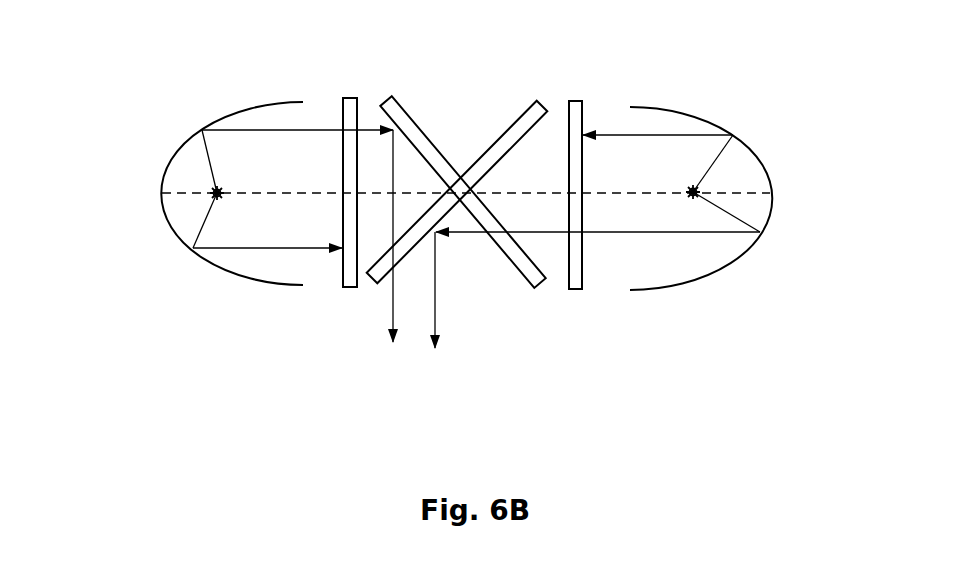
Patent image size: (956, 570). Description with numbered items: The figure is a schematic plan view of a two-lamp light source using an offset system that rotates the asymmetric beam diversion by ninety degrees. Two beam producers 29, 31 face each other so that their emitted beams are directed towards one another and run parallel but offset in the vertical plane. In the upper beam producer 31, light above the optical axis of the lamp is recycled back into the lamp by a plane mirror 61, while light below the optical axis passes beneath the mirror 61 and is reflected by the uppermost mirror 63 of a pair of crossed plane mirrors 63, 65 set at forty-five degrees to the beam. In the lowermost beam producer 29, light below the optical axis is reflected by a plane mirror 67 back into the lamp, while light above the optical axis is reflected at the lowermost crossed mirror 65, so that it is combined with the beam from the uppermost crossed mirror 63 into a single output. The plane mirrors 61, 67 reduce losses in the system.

The lowermost beam producer 29 is at (156, 208).
The upper beam producer 31 is at (773, 178).
The plane mirror 61 is at (585, 95).
The uppermost crossed plane mirror 63 is at (503, 117).
The lowermost crossed plane mirror 65 is at (508, 280).
The plane mirror 67 is at (334, 293).